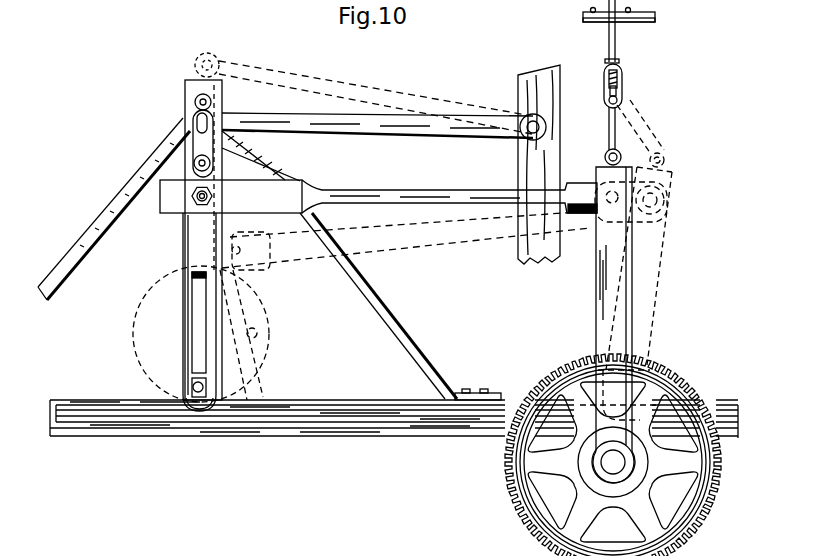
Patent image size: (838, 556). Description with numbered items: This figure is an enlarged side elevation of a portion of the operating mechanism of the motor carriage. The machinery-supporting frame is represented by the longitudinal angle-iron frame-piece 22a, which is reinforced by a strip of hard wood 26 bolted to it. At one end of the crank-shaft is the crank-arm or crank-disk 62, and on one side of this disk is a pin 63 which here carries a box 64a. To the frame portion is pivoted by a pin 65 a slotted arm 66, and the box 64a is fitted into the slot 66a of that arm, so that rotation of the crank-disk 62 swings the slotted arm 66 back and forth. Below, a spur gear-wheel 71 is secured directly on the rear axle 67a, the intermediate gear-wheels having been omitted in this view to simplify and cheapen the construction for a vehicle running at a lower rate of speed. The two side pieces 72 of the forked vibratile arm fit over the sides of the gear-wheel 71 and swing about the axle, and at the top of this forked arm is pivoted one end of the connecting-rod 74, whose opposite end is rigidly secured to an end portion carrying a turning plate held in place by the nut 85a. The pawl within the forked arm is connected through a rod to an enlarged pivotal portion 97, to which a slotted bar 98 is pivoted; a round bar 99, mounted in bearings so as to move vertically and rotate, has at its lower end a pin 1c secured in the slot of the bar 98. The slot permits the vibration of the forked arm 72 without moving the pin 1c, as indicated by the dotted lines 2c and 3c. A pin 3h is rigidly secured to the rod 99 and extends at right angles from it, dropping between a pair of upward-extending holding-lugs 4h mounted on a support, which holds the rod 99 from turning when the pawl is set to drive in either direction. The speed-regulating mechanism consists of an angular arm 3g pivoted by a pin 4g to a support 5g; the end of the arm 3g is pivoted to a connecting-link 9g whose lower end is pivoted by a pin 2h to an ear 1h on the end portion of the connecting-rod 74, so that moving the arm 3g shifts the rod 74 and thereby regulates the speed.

The pin 65 is at (190, 98).
The connecting-link 9g is at (193, 137).
The pin 2h is at (197, 167).
The ear 1h is at (212, 165).
The nut 85a is at (195, 203).
The slotted arm 66 is at (190, 237).
The slot 66a is at (198, 345).
The box 64a is at (190, 384).
The pin 63 is at (196, 400).
The crank-arm or crank-disk 62 is at (268, 302).
The angular arm 3g is at (353, 120).
The connecting-rod 74 is at (365, 190).
The support 5g is at (518, 177).
The pin 4g is at (547, 130).
The holding-lugs 4h is at (657, 16).
The pin 3h is at (583, 22).
The round bar 99 is at (617, 51).
The slotted bar 98 is at (622, 82).
The pin 1c is at (620, 101).
The dotted lines 2c is at (650, 133).
The enlarged pivotal portion 97 is at (605, 157).
The side pieces of forked arm 72 is at (597, 288).
The dotted lines 3c is at (650, 264).
The strip of hard wood 26 is at (343, 396).
The angle-iron frame-piece 22a is at (356, 438).
The spur gear-wheel 71 is at (510, 492).
The rear axle 67a is at (605, 466).